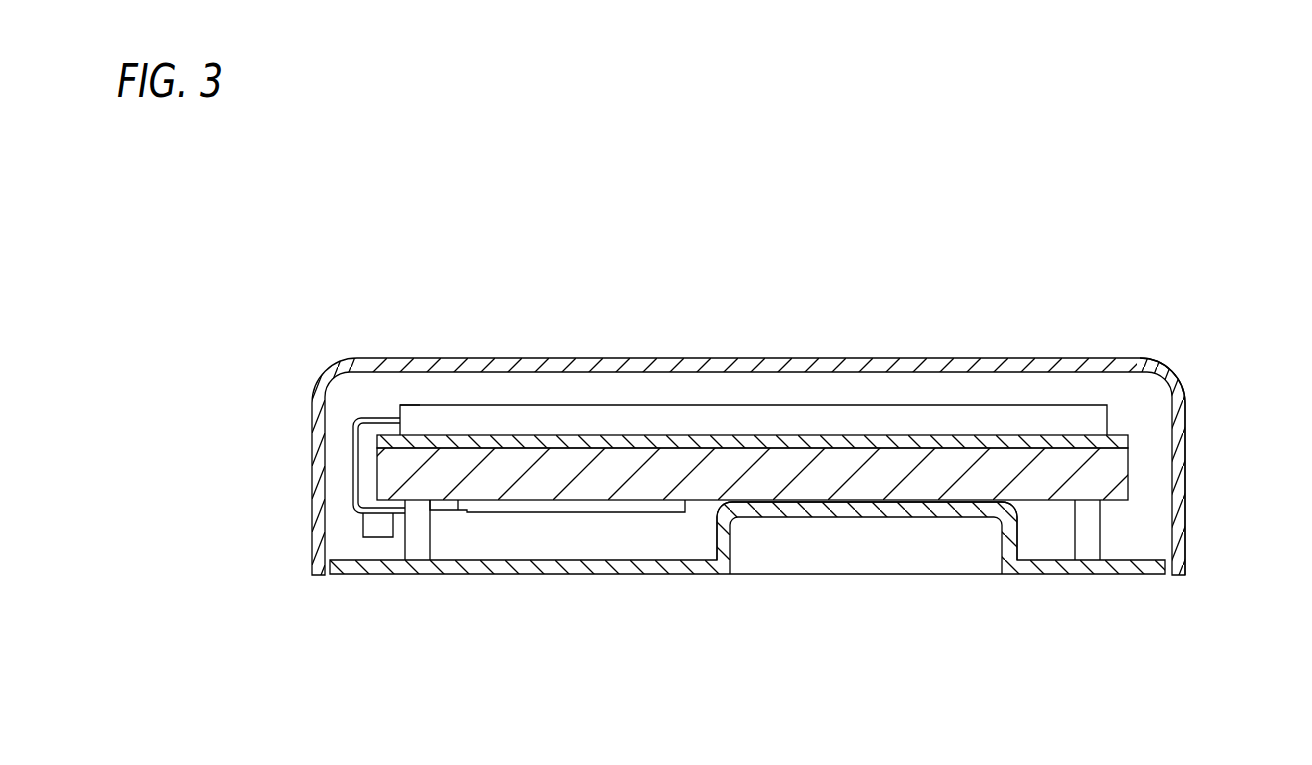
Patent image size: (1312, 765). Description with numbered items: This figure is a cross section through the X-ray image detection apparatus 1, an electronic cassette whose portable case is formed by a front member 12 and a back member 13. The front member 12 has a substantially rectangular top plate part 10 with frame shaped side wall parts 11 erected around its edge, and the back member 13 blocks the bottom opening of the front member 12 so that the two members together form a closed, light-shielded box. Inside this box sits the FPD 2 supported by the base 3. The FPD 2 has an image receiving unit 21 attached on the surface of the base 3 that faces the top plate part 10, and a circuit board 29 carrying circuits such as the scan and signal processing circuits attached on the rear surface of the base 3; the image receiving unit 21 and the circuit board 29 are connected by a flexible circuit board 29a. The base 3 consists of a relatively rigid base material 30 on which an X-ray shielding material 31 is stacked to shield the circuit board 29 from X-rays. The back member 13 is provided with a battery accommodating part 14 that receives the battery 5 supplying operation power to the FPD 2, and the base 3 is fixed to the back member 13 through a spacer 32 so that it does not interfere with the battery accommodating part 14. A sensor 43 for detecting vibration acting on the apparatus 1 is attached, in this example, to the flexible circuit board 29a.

The X-ray image detection apparatus 1 is at (1212, 228).
The FPD 2 is at (430, 396).
The base 3 is at (833, 462).
The battery 5 is at (850, 585).
The top plate part 10 is at (808, 366).
The side wall parts 11 is at (1178, 548).
The front member 12 is at (1172, 360).
The back member 13 is at (565, 581).
The battery accommodating part 14 is at (993, 538).
The image receiving unit 21 is at (410, 413).
The circuit board 29 is at (493, 506).
The flexible circuit board 29a is at (354, 467).
The base material 30 is at (1125, 475).
The X-ray shielding material 31 is at (1125, 444).
The spacer 32 is at (420, 550).
The sensor 43 is at (380, 538).